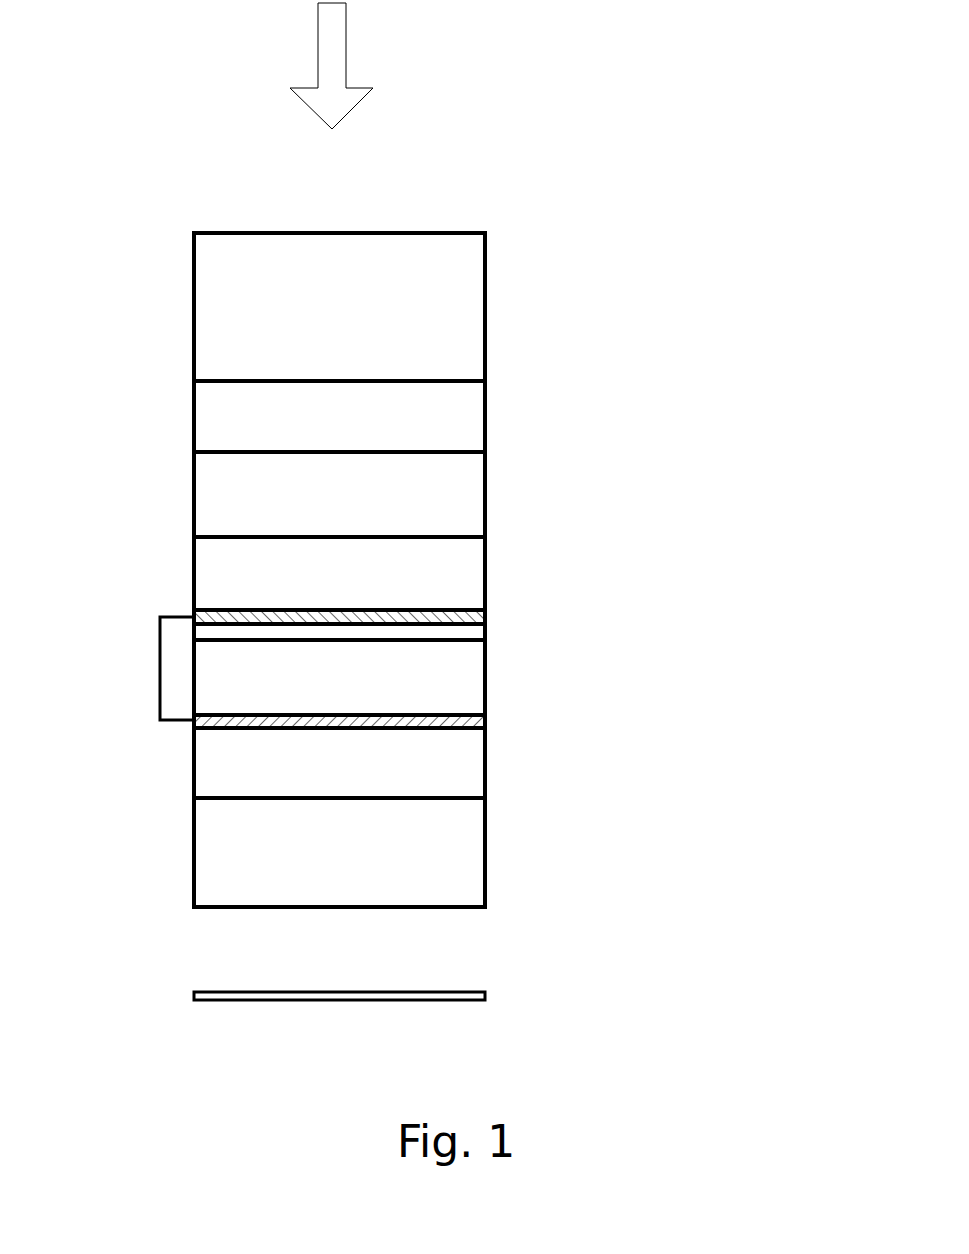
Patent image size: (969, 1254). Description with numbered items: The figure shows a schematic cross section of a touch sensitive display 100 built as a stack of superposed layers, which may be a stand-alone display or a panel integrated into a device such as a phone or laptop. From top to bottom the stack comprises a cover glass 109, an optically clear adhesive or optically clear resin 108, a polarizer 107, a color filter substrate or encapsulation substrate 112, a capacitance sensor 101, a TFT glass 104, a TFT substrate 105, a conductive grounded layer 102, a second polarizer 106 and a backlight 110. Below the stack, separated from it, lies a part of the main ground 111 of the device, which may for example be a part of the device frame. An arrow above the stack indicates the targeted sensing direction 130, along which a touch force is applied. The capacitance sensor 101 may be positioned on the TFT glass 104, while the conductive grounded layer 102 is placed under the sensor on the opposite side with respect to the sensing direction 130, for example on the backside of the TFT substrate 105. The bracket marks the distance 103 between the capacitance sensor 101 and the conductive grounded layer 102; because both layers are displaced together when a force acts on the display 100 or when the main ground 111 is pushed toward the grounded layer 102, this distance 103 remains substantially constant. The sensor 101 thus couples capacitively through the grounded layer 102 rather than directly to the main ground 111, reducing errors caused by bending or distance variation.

The touch sensitive display 100 is at (668, 139).
The targeted sensing direction 130 is at (345, 50).
The cover glass 109 is at (453, 231).
The optically clear adhesive or optically clear resin 108 is at (485, 413).
The polarizer 107 is at (485, 495).
The color filter substrate or encapsulation substrate 112 is at (194, 563).
The capacitance sensor 101 is at (485, 613).
The TFT glass 104 is at (194, 635).
The TFT substrate 105 is at (194, 675).
The conductive grounded layer 102 is at (485, 718).
The distance 103 is at (158, 722).
The polarizer 106 is at (194, 793).
The backlight 110 is at (485, 880).
The main ground 111 is at (485, 993).